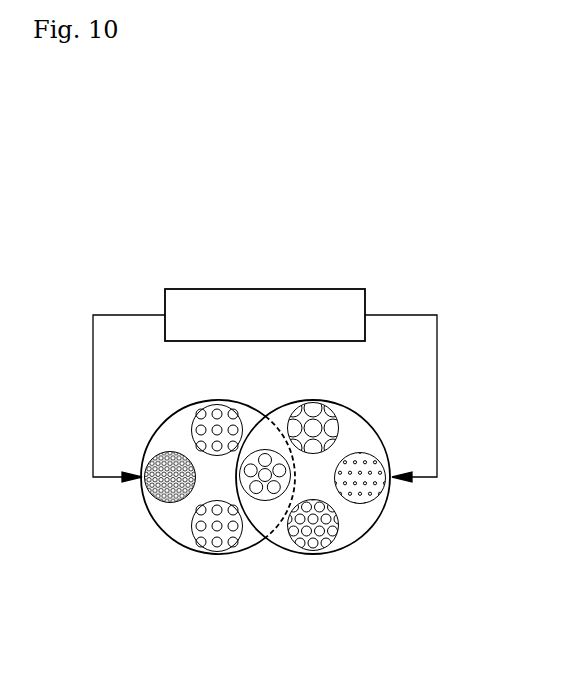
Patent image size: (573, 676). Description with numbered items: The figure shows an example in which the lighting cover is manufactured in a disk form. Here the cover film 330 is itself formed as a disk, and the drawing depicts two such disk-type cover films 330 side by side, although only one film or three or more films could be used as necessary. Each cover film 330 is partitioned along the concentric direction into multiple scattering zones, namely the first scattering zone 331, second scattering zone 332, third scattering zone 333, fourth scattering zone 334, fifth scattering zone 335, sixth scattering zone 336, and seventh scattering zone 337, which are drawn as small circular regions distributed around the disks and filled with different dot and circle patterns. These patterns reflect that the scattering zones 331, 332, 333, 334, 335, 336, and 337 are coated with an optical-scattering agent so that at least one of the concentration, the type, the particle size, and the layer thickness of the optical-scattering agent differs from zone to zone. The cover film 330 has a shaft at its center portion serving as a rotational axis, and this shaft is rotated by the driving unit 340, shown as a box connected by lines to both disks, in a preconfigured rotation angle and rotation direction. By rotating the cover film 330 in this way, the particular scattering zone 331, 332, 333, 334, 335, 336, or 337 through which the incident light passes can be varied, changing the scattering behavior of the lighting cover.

The cover film 330 is at (408, 585).
The first scattering zone 331 is at (152, 499).
The second scattering zone 332 is at (202, 553).
The third scattering zone 333 is at (267, 501).
The fourth scattering zone 334 is at (185, 420).
The fifth scattering zone 335 is at (332, 548).
The sixth scattering zone 336 is at (385, 502).
The seventh scattering zone 337 is at (345, 414).
The driving unit 340 is at (320, 289).